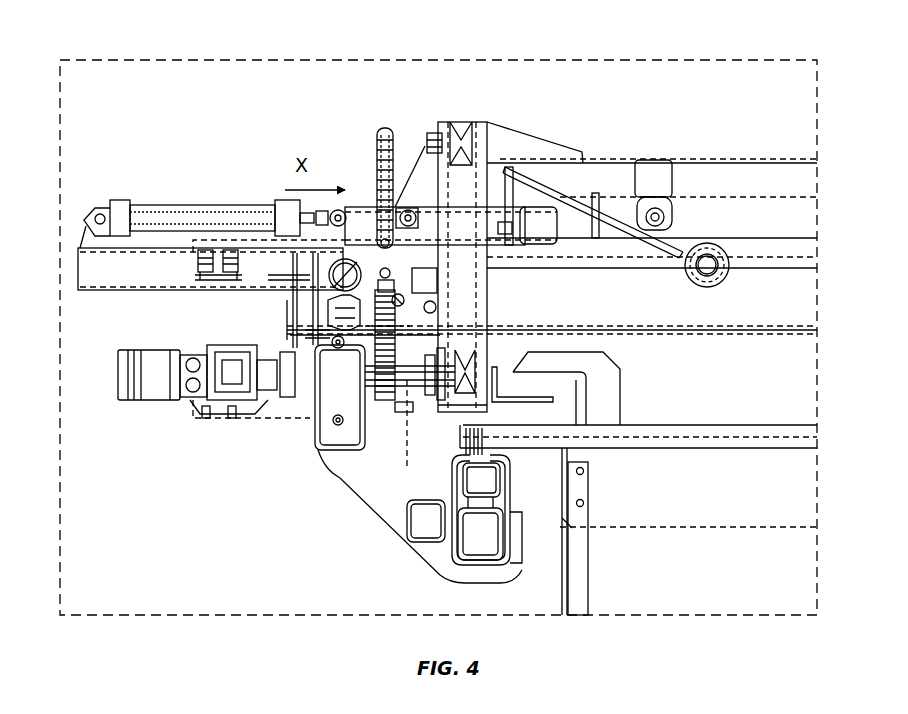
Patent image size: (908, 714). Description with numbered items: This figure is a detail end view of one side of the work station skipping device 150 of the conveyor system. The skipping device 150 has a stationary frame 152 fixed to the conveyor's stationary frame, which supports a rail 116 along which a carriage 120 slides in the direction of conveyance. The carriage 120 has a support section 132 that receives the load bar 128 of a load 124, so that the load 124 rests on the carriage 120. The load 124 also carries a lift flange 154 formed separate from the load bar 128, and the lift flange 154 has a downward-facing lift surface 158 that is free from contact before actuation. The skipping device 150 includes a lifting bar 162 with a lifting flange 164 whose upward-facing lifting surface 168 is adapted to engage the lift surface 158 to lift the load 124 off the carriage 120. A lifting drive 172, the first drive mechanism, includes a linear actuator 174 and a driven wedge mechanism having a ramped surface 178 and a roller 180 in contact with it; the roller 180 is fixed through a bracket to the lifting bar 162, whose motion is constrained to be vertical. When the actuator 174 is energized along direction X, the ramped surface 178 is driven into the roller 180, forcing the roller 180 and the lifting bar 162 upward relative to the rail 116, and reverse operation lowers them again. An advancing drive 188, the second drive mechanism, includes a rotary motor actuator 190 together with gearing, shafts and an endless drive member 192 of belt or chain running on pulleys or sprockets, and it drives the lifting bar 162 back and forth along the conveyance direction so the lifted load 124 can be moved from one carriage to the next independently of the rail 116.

The work station skipping device 150 is at (70, 42).
The stationary frame 152 is at (795, 305).
The actuator 174 is at (187, 207).
The endless drive member 192 is at (380, 150).
The lifting bar 162 is at (478, 300).
The ramped surface 178 is at (590, 195).
The roller 180 is at (672, 226).
The lifting drive 172 is at (183, 243).
The actuator 190 is at (150, 390).
The advancing drive 188 is at (285, 432).
The lifting surface 168 is at (504, 392).
The lifting flange 164 is at (518, 403).
The lift flange 154 is at (617, 387).
The lift surface 158 is at (552, 378).
The load bar 128 is at (690, 430).
The load 124 is at (771, 418).
The rail 116 is at (457, 455).
The support section 132 is at (460, 468).
The carriage 120 is at (452, 498).